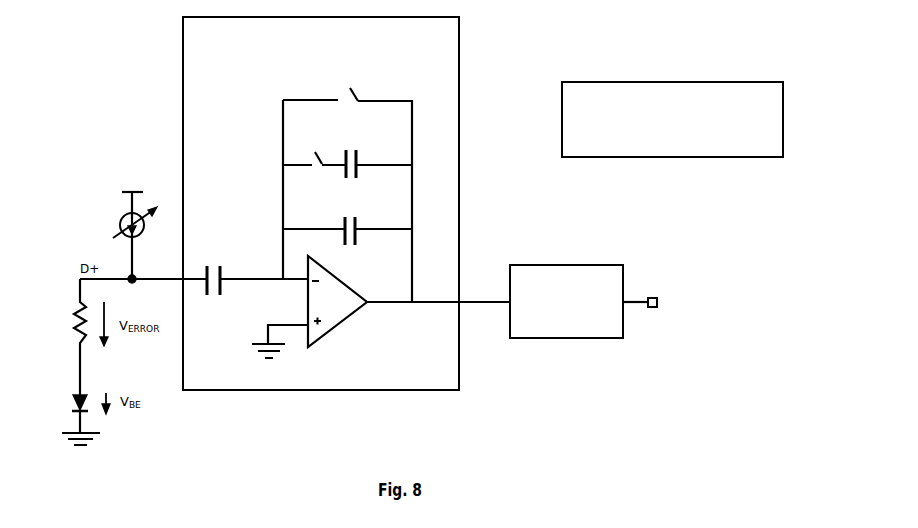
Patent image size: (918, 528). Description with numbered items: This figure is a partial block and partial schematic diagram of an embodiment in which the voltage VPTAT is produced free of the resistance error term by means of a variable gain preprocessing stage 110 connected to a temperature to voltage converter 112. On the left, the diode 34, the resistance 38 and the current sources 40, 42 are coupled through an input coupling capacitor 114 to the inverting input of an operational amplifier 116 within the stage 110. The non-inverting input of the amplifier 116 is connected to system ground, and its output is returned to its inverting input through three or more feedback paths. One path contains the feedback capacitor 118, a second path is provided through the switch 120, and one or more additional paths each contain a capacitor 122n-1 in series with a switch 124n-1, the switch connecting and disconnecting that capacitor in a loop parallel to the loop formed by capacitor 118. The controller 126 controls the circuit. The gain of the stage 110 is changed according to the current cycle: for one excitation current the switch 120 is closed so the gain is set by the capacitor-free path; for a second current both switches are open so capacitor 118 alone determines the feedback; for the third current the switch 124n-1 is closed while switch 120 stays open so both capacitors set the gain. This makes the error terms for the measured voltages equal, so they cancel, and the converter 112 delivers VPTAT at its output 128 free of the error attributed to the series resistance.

The variable gain preprocessing stage 110 is at (460, 120).
The switch 120 is at (353, 88).
The switch 124n-1 is at (303, 157).
The capacitor 122n-1 is at (360, 153).
The feedback capacitor 118 is at (358, 224).
The input coupling capacitor 114 is at (223, 272).
The operational amplifier 116 is at (348, 282).
The temperature to voltage converter 112 is at (570, 263).
The output 128 is at (653, 297).
The controller 126 is at (672, 119).
The current source 40 is at (108, 233).
The current source 42 is at (109, 233).
The resistance 38 is at (72, 304).
The diode 34 is at (72, 392).